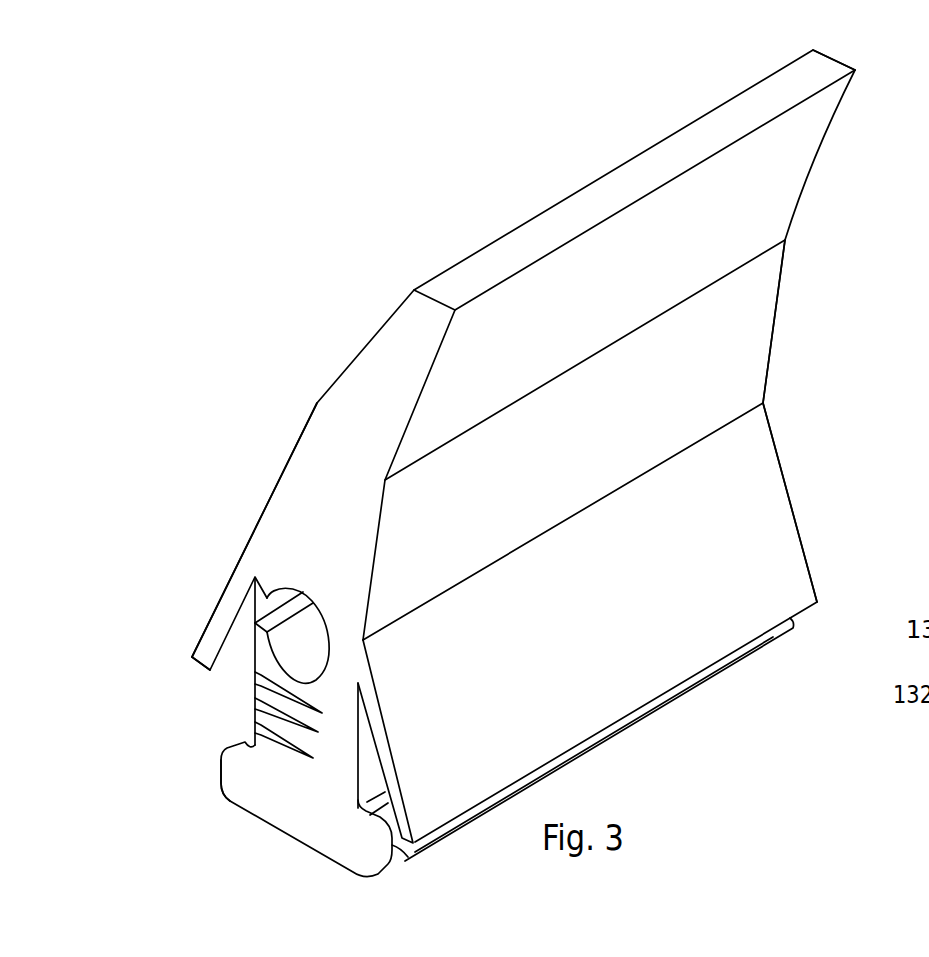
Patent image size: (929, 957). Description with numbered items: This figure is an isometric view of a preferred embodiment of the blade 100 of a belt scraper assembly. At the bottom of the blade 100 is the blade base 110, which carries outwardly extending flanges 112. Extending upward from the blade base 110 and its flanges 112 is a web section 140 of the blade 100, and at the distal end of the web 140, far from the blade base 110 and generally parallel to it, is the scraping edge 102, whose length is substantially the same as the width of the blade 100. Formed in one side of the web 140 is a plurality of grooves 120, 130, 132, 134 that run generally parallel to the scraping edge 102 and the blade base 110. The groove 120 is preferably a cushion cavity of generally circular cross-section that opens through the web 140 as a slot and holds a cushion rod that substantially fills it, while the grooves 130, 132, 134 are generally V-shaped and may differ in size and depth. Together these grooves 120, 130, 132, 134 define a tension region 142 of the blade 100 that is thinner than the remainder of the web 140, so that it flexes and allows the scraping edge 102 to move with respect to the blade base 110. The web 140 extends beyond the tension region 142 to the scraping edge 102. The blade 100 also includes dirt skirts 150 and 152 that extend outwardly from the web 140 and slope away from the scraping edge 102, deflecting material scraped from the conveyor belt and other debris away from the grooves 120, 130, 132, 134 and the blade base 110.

The blade 100 is at (401, 308).
The scraping edge 102 is at (818, 95).
The blade base 110 is at (268, 820).
The outwardly extending flanges 112 is at (222, 768).
The groove 120 is at (318, 622).
The groove 130 is at (255, 672).
The groove 132 is at (255, 698).
The groove 134 is at (255, 722).
The web section 140 is at (283, 500).
The tension region 142 is at (333, 728).
The dirt skirt 150 is at (778, 458).
The dirt skirt 152 is at (208, 623).